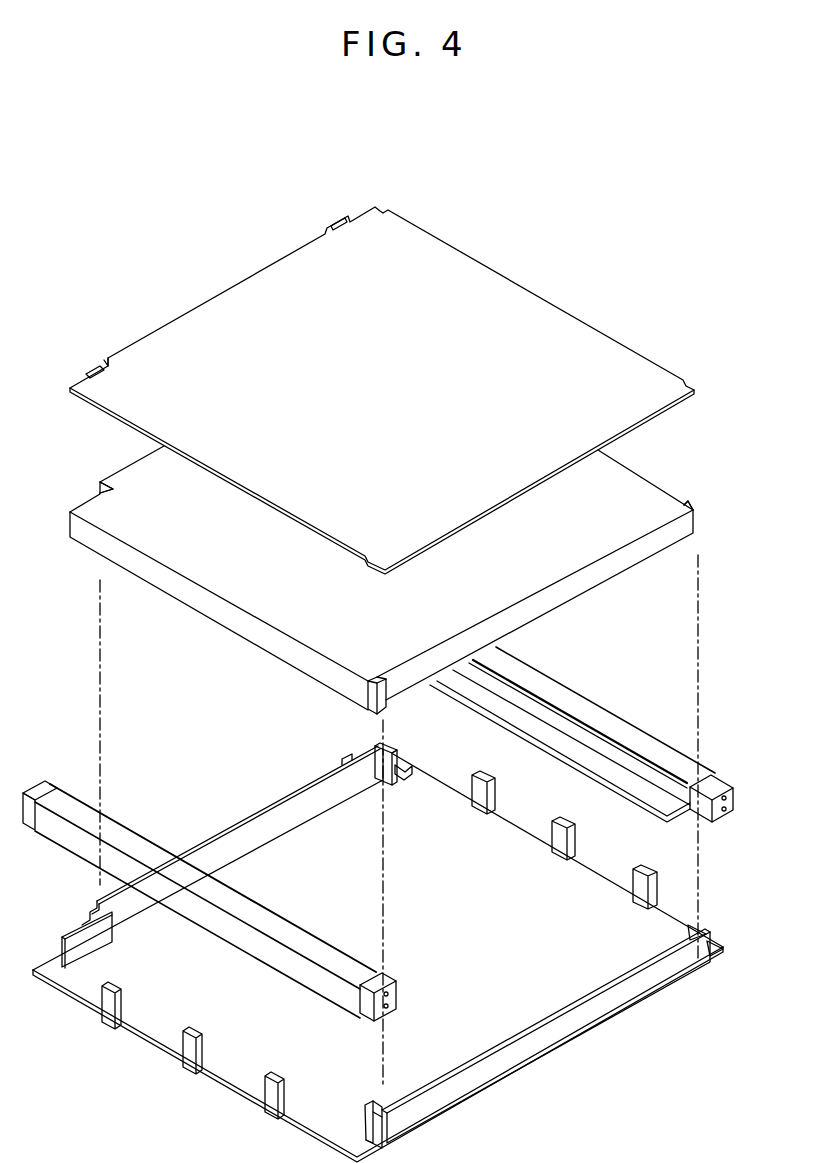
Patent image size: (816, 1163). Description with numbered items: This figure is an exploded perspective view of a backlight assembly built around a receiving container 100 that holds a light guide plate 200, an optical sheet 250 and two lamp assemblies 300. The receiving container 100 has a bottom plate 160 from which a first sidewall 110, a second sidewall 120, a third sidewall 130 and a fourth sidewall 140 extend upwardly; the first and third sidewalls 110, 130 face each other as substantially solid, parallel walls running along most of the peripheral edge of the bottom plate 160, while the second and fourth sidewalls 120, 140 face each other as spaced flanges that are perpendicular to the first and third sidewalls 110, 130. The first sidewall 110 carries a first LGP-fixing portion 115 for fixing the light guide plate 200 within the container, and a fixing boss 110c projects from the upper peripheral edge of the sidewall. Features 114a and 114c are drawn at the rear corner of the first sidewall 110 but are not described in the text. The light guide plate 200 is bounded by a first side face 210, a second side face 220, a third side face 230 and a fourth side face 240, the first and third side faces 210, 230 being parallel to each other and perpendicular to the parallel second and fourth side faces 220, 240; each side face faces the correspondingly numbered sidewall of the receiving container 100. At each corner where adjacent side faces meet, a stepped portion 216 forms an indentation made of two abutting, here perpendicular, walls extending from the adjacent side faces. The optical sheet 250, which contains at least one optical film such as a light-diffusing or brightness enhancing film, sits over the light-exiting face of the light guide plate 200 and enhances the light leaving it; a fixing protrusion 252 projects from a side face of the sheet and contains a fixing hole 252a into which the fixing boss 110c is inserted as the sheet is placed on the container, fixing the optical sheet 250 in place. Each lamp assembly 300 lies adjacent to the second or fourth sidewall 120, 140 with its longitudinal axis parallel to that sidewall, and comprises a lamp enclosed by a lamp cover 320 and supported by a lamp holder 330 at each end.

The receiving container 100 is at (377, 931).
The first sidewall 110 is at (260, 828).
The fixing boss 110c is at (93, 912).
The hook 114a is at (397, 766).
The coupling tab 114c is at (386, 748).
The first LGP-fixing portion 115 is at (94, 946).
The second sidewall 120 is at (577, 842).
The third sidewall 130 is at (648, 987).
The fourth sidewall 140 is at (273, 1100).
The bottom plate 160 is at (323, 1113).
The light guide plate 200 is at (380, 566).
The first side face 210 is at (110, 463).
The stepped portion 216 is at (99, 488).
The second side face 220 is at (636, 469).
The third side face 230 is at (545, 606).
The fourth side face 240 is at (230, 620).
The optical sheet 250 is at (356, 390).
The fixing protrusion 252 is at (97, 370).
The fixing hole 252a is at (84, 375).
The lamp assembly 300 is at (378, 834).
The lamp cover 320 is at (316, 916).
The lamp holder 330 is at (397, 998).